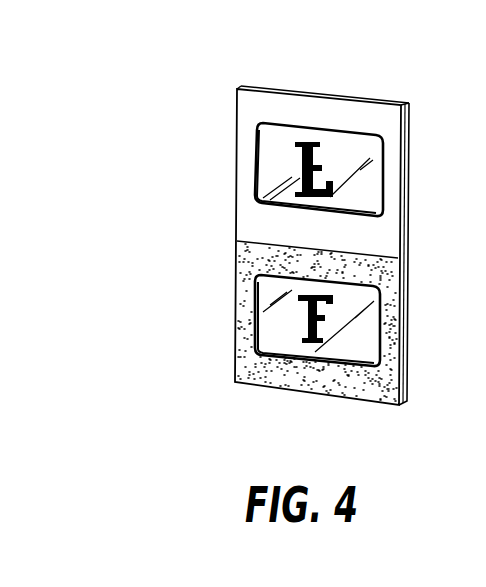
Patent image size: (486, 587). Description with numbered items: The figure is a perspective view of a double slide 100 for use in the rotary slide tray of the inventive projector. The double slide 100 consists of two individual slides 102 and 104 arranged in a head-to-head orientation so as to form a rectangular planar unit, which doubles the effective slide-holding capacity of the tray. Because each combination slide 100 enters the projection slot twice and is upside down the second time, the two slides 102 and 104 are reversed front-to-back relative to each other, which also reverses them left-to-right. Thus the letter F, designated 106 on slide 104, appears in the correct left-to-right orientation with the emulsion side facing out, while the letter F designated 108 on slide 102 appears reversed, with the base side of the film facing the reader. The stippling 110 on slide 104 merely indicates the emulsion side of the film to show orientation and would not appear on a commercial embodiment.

The double slide 100 is at (324, 224).
The individual slide 102 is at (407, 202).
The individual slide 104 is at (403, 342).
The letter F 106 is at (300, 316).
The letter F 108 is at (332, 176).
The stippling 110 is at (385, 395).